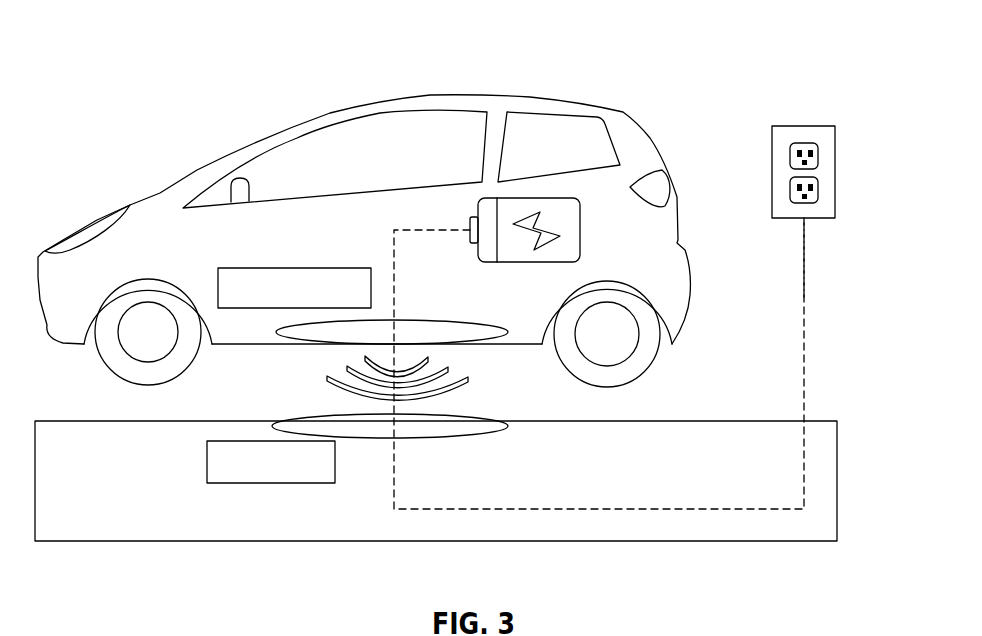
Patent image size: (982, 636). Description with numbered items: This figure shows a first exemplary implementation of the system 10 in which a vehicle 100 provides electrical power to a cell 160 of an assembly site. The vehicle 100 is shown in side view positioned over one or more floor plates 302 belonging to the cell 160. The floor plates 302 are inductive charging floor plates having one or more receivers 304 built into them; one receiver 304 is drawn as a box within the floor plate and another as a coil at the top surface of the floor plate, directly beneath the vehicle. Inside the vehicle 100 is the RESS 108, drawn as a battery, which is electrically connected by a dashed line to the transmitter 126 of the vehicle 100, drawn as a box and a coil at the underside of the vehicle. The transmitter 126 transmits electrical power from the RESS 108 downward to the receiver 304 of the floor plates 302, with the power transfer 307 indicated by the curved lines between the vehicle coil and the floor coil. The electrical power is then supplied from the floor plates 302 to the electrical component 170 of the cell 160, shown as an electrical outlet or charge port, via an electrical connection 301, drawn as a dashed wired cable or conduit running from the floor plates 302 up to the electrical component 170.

The system 10 is at (107, 54).
The vehicle 100 is at (203, 167).
The RESS 108 is at (545, 197).
The transmitter 126 is at (262, 268).
The cell 160 is at (759, 382).
The electrical component 170 is at (835, 172).
The electrical connection 301 is at (805, 293).
The floor plate 302 is at (88, 413).
The receiver 304 is at (205, 460).
The wireless power transfer field 307 is at (466, 383).